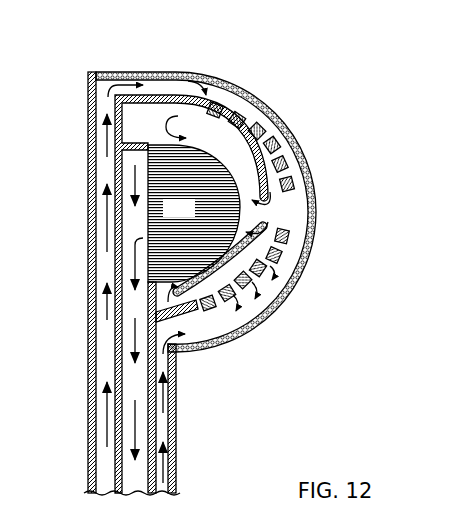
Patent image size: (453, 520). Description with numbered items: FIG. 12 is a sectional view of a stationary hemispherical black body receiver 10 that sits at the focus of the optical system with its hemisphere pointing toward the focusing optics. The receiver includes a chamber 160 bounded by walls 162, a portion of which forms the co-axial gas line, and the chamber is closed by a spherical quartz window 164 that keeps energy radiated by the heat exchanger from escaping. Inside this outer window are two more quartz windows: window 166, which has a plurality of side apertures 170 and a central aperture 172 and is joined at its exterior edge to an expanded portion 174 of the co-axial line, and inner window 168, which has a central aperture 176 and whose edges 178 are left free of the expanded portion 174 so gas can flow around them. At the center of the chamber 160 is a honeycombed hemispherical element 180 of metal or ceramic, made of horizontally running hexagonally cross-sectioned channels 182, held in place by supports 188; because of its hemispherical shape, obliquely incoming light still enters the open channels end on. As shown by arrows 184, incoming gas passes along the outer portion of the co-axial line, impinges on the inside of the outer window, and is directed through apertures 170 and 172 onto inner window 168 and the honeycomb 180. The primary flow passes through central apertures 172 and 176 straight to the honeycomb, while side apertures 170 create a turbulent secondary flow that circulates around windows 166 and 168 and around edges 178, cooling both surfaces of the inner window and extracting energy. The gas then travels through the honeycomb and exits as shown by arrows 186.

The heat exchange apparatus 10 is at (208, 261).
The chamber 160 is at (276, 210).
The walls 162 is at (90, 113).
The spherical window 164 is at (214, 100).
The window 166 is at (229, 108).
The inner window 168 is at (264, 134).
The side apertures 170 is at (285, 154).
The central aperture 172 is at (288, 202).
The expanded portion 174 is at (117, 168).
The central aperture 176 is at (264, 214).
The edges 178 is at (193, 318).
The honeycombed hemispherical element 180 is at (167, 216).
The channels 182 is at (286, 245).
The arrows 184 is at (109, 302).
The arrows 186 is at (135, 420).
The supports 188 is at (147, 308).